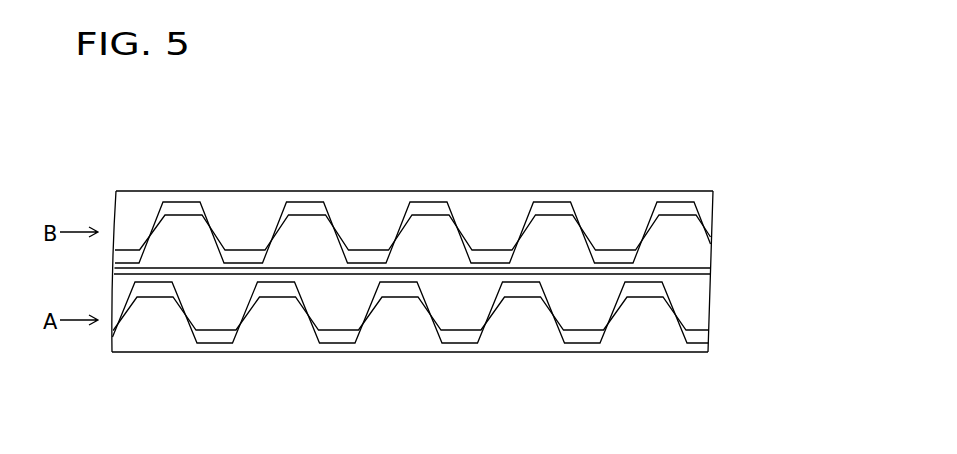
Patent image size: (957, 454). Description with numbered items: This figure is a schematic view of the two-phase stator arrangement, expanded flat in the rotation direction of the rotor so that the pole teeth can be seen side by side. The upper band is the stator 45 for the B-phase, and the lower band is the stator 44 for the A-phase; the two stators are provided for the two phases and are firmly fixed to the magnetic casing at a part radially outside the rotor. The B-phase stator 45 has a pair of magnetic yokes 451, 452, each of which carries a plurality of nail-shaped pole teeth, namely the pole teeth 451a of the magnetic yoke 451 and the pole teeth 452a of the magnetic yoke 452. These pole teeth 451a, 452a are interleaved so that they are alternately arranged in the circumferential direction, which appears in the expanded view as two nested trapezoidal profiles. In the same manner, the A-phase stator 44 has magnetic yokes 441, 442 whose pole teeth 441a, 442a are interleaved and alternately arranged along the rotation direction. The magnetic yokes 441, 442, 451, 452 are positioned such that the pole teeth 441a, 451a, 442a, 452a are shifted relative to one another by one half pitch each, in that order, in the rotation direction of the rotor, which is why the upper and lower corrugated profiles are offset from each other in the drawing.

The stator 45 is at (469, 204).
The magnetic yoke 452 is at (703, 210).
The magnetic yoke 451 is at (692, 262).
The pole teeth 452a is at (238, 208).
The pole teeth 451a is at (300, 232).
The stator 44 is at (468, 348).
The magnetic yoke 442 is at (700, 292).
The magnetic yoke 441 is at (705, 351).
The pole teeth 442a is at (313, 312).
The pole teeth 441a is at (248, 342).